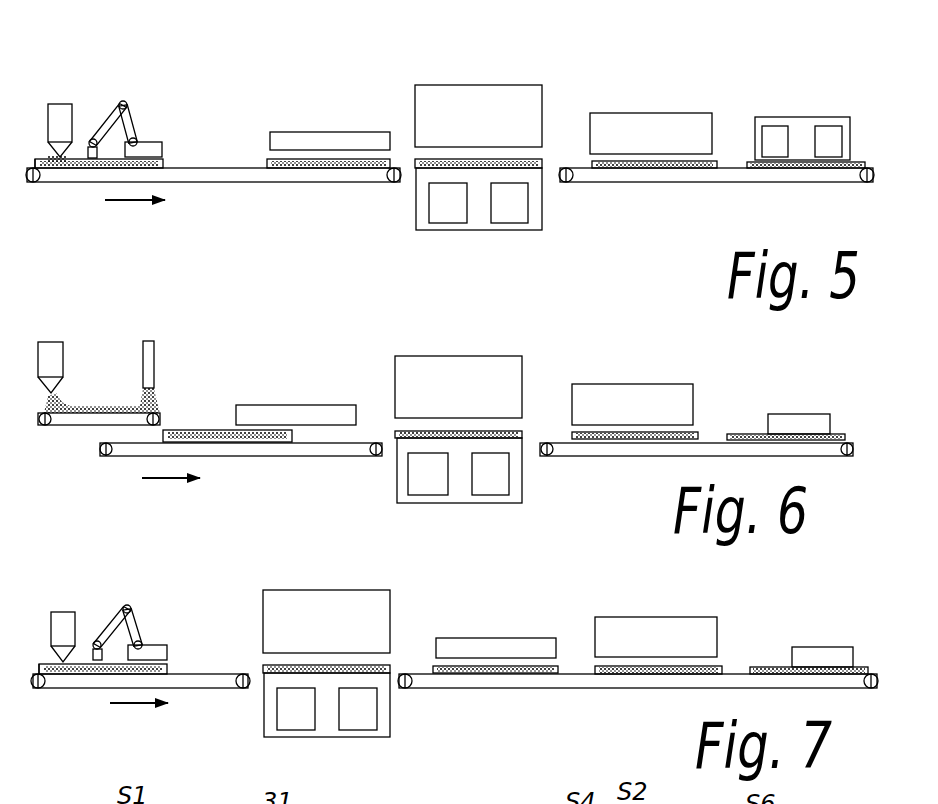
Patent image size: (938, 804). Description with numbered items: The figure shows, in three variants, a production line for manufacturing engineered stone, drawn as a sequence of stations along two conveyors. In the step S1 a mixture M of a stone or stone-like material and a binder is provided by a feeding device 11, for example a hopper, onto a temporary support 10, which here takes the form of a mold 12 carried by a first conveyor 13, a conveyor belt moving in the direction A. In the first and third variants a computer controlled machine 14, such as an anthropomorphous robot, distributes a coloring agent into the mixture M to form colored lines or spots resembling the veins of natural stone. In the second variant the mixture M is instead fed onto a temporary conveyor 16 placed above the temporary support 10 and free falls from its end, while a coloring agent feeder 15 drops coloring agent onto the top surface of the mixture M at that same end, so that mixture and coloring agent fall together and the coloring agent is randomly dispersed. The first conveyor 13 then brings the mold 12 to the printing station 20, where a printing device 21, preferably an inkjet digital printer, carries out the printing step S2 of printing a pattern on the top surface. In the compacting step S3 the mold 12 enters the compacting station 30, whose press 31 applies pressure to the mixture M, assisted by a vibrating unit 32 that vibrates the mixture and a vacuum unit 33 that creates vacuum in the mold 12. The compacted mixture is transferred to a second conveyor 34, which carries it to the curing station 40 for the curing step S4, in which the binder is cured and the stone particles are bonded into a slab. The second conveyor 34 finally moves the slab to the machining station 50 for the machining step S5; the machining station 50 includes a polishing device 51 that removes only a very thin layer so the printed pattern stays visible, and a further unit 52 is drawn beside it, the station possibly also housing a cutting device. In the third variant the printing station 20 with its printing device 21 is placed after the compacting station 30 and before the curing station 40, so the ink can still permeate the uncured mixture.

In FIG. 5, the temporary support 10 is at (40, 160).
In FIG. 7, the temporary support 10 is at (40, 664).
In FIG. 5, the feeding device 11 is at (57, 104).
In FIG. 6, the feeding device 11 is at (53, 350).
In FIG. 7, the feeding device 11 is at (60, 612).
In FIG. 5, the mold 12 is at (165, 162).
In FIG. 6, the mold 12 is at (240, 443).
In FIG. 7, the mold 12 is at (168, 668).
In FIG. 5, the first conveyor 13 is at (208, 183).
In FIG. 6, the first conveyor 13 is at (272, 457).
In FIG. 7, the first conveyor 13 is at (205, 689).
In FIG. 5, the computer controlled machine 14 is at (153, 146).
In FIG. 7, the computer controlled machine 14 is at (155, 650).
In FIG. 6, the coloring agent feeder 15 is at (155, 340).
In FIG. 6, the temporary conveyor 16 is at (80, 425).
In FIG. 5, the printing station 20 is at (315, 104).
In FIG. 6, the printing station 20 is at (297, 379).
In FIG. 7, the printing station 20 is at (497, 621).
In FIG. 5, the printing device 21 is at (362, 140).
In FIG. 6, the printing device 21 is at (350, 407).
In FIG. 7, the printing device 21 is at (545, 645).
In FIG. 5, the compacting station 30 is at (507, 229).
In FIG. 6, the compacting station 30 is at (486, 503).
In FIG. 7, the compacting station 30 is at (337, 734).
In FIG. 5, the press 31 is at (462, 93).
In FIG. 6, the press 31 is at (442, 367).
In FIG. 7, the press 31 is at (287, 593).
In FIG. 5, the vibrating unit 32 is at (443, 216).
In FIG. 6, the vibrating unit 32 is at (420, 490).
In FIG. 7, the vibrating unit 32 is at (288, 725).
In FIG. 5, the vacuum unit 33 is at (512, 216).
In FIG. 6, the vacuum unit 33 is at (493, 490).
In FIG. 7, the vacuum unit 33 is at (358, 725).
In FIG. 5, the second conveyor 34 is at (650, 183).
In FIG. 6, the second conveyor 34 is at (634, 457).
In FIG. 7, the second conveyor 34 is at (655, 689).
In FIG. 5, the curing station 40 is at (632, 122).
In FIG. 6, the curing station 40 is at (630, 407).
In FIG. 7, the curing station 40 is at (645, 615).
In FIG. 5, the machining station 50 is at (811, 141).
In FIG. 6, the machining station 50 is at (825, 425).
In FIG. 7, the machining station 50 is at (840, 652).
In FIG. 5, the polishing device 51 is at (780, 148).
In FIG. 5, the second finishing unit 52 is at (834, 150).
In FIG. 5, the step of providing a mixture S1 is at (92, 95).
In FIG. 6, the step of providing a mixture S1 is at (48, 330).
In FIG. 7, the step of providing a mixture S1 is at (95, 600).
In FIG. 5, the printing step S2 is at (303, 96).
In FIG. 6, the printing step S2 is at (283, 367).
In FIG. 7, the printing step S2 is at (488, 630).
In FIG. 5, the compacting step S3 is at (522, 76).
In FIG. 6, the compacting step S3 is at (503, 348).
In FIG. 7, the compacting step S3 is at (330, 578).
In FIG. 5, the curing step S4 is at (668, 90).
In FIG. 6, the curing step S4 is at (663, 372).
In FIG. 7, the curing step S4 is at (688, 608).
In FIG. 5, the machining step S5 is at (793, 100).
In FIG. 6, the machining step S5 is at (790, 407).
In FIG. 7, the machining step S5 is at (808, 635).
In FIG. 5, the direction A is at (105, 200).
In FIG. 6, the direction A is at (142, 478).
In FIG. 7, the direction A is at (110, 703).
In FIG. 5, the mixture M is at (68, 163).
In FIG. 6, the mixture M is at (100, 405).